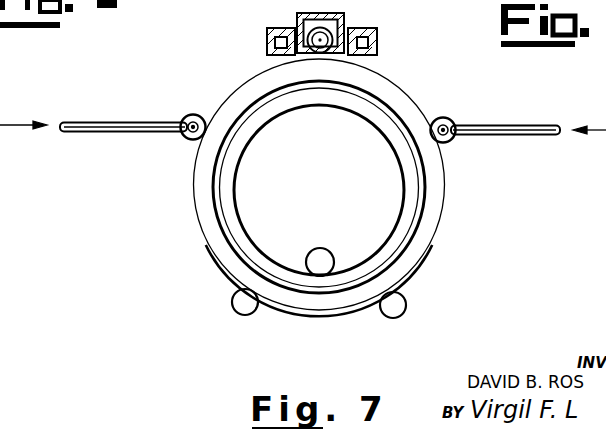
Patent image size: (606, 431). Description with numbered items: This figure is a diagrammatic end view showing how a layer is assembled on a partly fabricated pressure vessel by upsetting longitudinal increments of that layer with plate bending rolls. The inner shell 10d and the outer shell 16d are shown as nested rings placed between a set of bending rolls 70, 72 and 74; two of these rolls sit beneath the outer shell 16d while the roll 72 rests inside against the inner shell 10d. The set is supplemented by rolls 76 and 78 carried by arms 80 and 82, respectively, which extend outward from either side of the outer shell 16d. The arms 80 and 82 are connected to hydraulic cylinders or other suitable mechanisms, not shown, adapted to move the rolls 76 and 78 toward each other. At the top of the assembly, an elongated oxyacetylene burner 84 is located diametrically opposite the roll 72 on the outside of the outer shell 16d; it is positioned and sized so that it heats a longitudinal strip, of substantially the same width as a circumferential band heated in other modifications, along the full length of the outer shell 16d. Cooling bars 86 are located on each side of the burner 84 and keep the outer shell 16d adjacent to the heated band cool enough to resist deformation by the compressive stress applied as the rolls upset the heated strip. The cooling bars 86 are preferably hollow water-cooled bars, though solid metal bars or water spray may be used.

The inner shell 10d is at (232, 221).
The outer shell 16d is at (205, 222).
The bending roll 70 is at (232, 303).
The bending roll 72 is at (313, 256).
The bending roll 74 is at (407, 305).
The roll 76 is at (445, 118).
The roll 78 is at (192, 115).
The arm 80 is at (511, 115).
The arm 82 is at (137, 113).
The oxyacetylene burner 84 is at (322, 28).
The cooling bars 86 is at (267, 39).